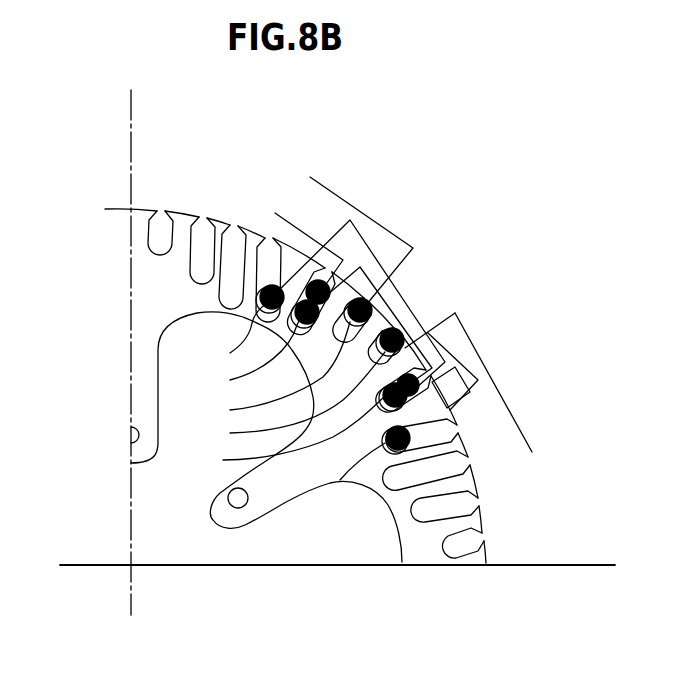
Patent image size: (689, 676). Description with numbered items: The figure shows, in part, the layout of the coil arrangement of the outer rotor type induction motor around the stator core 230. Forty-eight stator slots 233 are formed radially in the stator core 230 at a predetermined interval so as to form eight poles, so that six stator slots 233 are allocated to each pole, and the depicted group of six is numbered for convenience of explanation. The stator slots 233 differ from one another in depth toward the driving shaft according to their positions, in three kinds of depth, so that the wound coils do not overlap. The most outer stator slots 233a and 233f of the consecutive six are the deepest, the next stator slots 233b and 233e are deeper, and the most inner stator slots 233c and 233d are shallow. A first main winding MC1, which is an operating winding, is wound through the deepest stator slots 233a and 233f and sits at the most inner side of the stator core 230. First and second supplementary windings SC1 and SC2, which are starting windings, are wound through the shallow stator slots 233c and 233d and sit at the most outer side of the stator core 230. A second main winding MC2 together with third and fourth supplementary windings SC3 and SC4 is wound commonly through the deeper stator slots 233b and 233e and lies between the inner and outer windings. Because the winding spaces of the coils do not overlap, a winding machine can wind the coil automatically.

The stator core 230 is at (123, 233).
The stator slots 233 is at (163, 222).
The most outer stator slot 233a is at (228, 326).
The next stator slot 233b is at (251, 337).
The most inner stator slot 233c is at (271, 359).
The most inner stator slot 233d is at (287, 387).
The next stator slot 233e is at (292, 424).
The most outer stator slot 233f is at (340, 480).
The first supplementary winding SC1 is at (345, 193).
The second supplementary winding SC2 is at (510, 405).
The third supplementary winding SC3 is at (300, 232).
The fourth supplementary winding SC4 is at (482, 425).
The first main winding MC1 is at (420, 312).
The second main winding MC2 is at (420, 278).